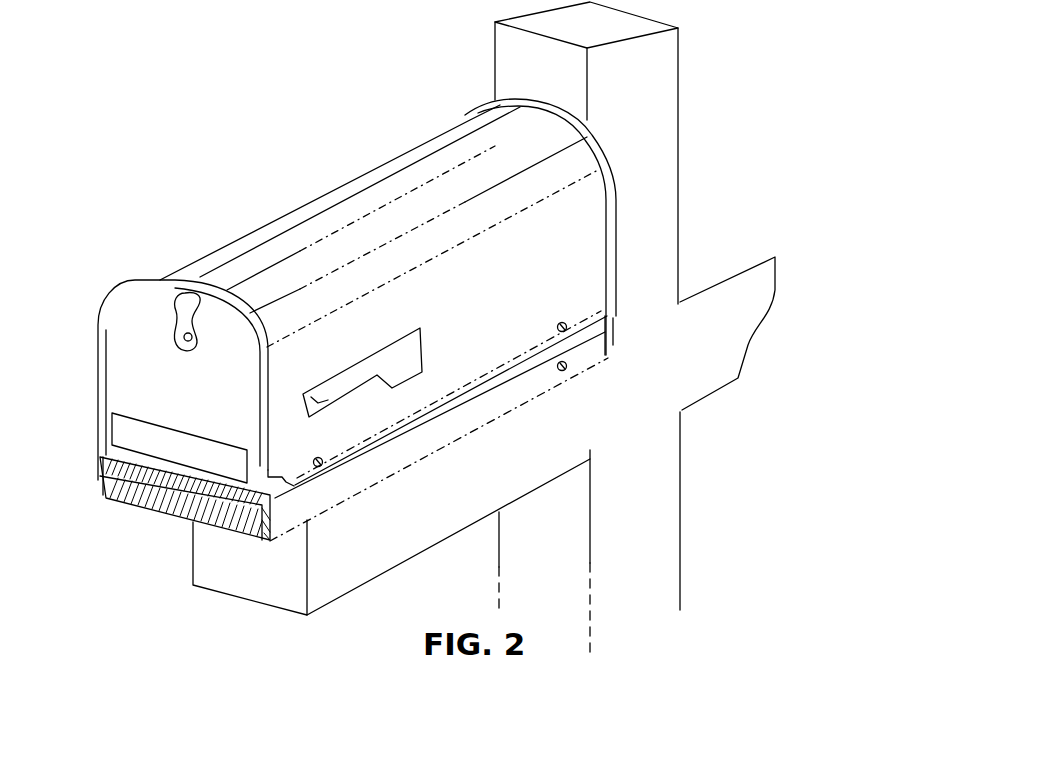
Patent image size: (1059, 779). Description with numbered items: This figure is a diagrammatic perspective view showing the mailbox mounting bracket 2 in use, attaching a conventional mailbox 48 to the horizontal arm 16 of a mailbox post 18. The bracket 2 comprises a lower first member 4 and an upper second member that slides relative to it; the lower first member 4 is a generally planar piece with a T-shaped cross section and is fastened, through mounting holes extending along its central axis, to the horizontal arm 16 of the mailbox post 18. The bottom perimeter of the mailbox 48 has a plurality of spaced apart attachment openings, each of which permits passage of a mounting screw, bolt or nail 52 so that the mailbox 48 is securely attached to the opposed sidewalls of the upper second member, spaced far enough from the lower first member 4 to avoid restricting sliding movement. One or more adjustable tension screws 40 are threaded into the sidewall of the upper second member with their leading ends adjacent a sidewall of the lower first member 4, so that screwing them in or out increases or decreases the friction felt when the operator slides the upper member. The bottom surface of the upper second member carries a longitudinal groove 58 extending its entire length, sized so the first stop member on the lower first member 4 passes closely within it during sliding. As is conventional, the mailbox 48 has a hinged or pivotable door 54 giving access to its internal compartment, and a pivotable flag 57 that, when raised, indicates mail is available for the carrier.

The mailbox mounting bracket 2 is at (177, 516).
The lower first member 4 is at (198, 232).
The horizontal arm 16 is at (338, 588).
The mailbox post 18 is at (667, 490).
The adjustable tension screw 40 is at (563, 372).
The mailbox 48 is at (383, 175).
The mounting screw 52 is at (567, 320).
The door 54 is at (117, 368).
The pivotable flag 57 is at (373, 360).
The longitudinal groove 58 is at (190, 493).